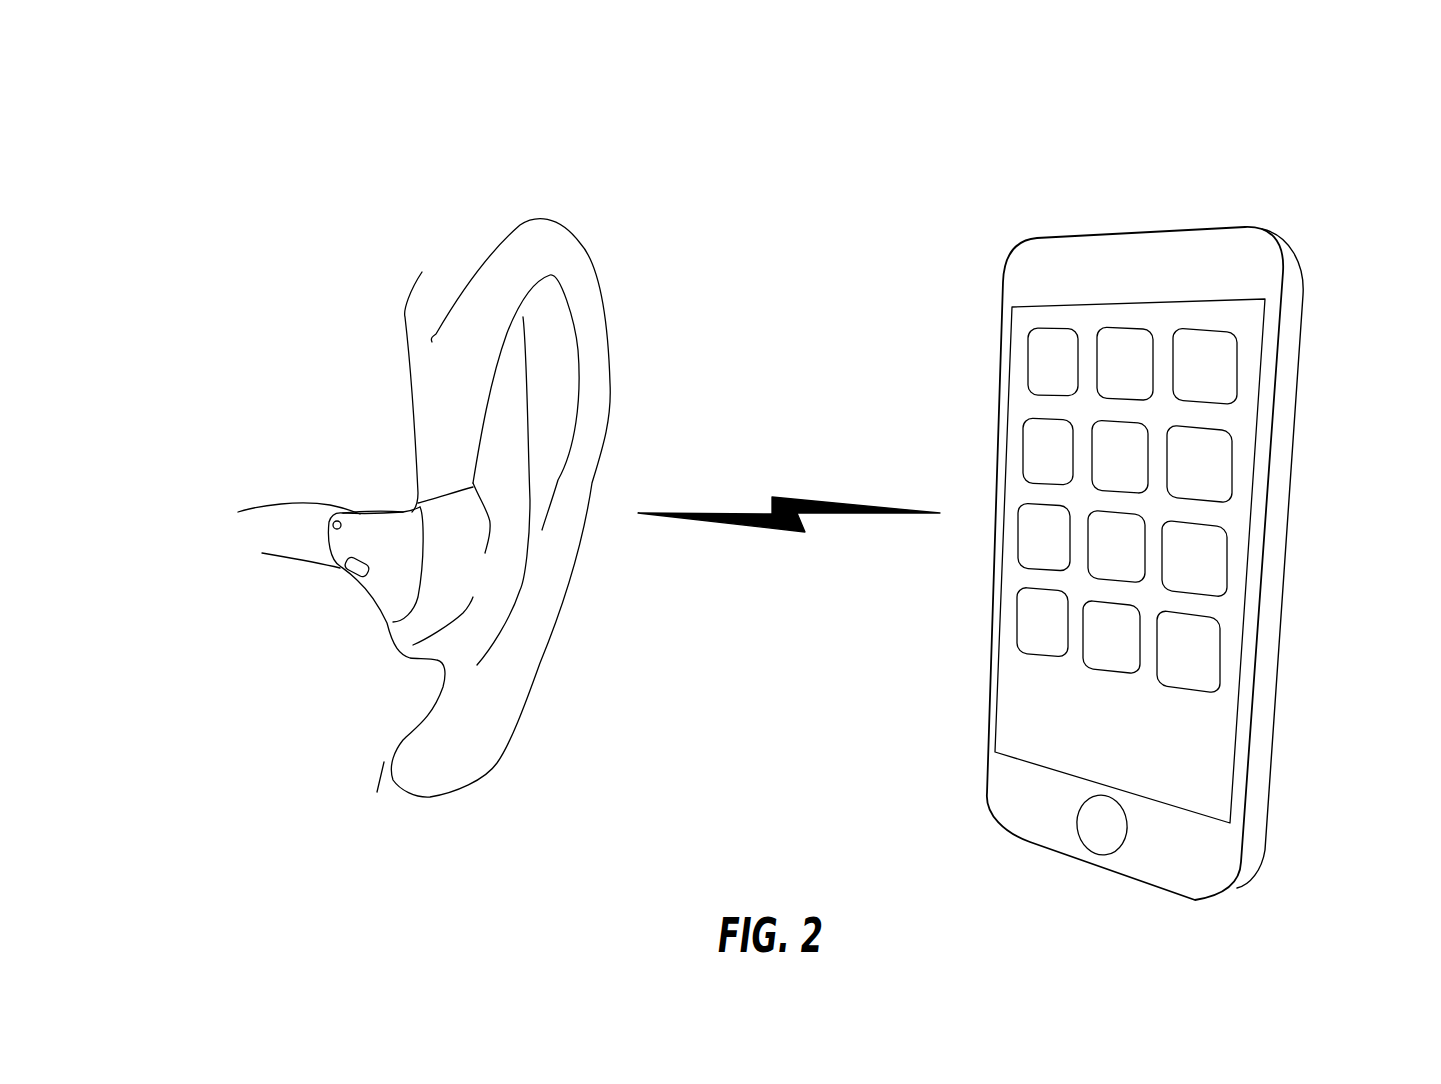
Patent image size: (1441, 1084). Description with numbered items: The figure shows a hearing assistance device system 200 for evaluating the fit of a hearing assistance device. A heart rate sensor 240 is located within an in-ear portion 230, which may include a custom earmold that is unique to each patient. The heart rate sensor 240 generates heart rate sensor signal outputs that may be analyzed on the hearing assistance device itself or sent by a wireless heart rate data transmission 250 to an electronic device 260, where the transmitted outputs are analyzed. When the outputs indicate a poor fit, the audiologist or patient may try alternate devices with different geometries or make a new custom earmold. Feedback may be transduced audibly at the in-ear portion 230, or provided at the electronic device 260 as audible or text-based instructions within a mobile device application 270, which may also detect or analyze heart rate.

The hearing assistance device system 200 is at (1356, 84).
The in-ear portion 230 is at (397, 550).
The heart rate sensor 240 is at (358, 569).
The wireless heart rate data transmission 250 is at (913, 512).
The electronic device 260 is at (995, 432).
The mobile device application 270 is at (1052, 375).